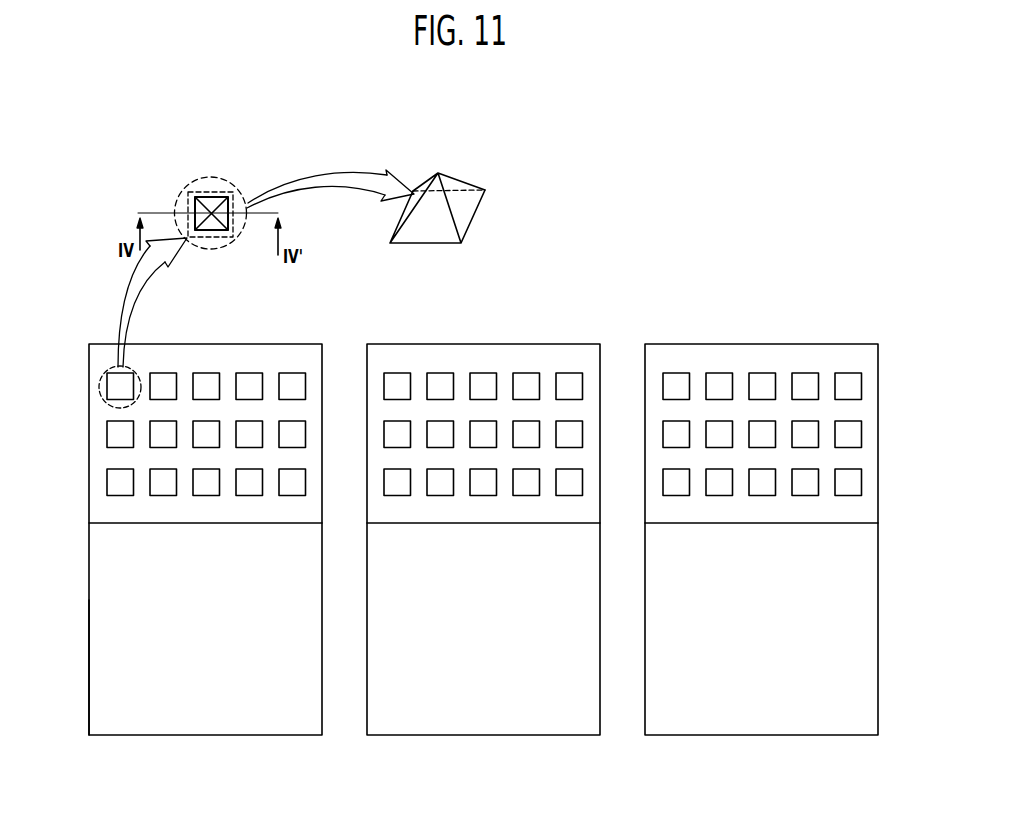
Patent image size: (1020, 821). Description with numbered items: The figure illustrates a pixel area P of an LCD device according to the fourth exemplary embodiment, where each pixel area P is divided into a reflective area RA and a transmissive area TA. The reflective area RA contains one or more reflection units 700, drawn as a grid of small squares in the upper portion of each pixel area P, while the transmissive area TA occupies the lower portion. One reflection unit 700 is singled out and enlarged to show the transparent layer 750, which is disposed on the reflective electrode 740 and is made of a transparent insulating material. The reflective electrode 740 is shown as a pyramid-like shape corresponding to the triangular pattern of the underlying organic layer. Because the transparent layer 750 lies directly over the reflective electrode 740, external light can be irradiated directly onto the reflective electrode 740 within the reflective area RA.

The reflection unit 700 is at (311, 134).
The reflective electrode 740 is at (463, 181).
The transparent layer 750 is at (231, 194).
The reflective area RA is at (89, 430).
The transmissive area TA is at (89, 614).
The pixel area P is at (206, 737).